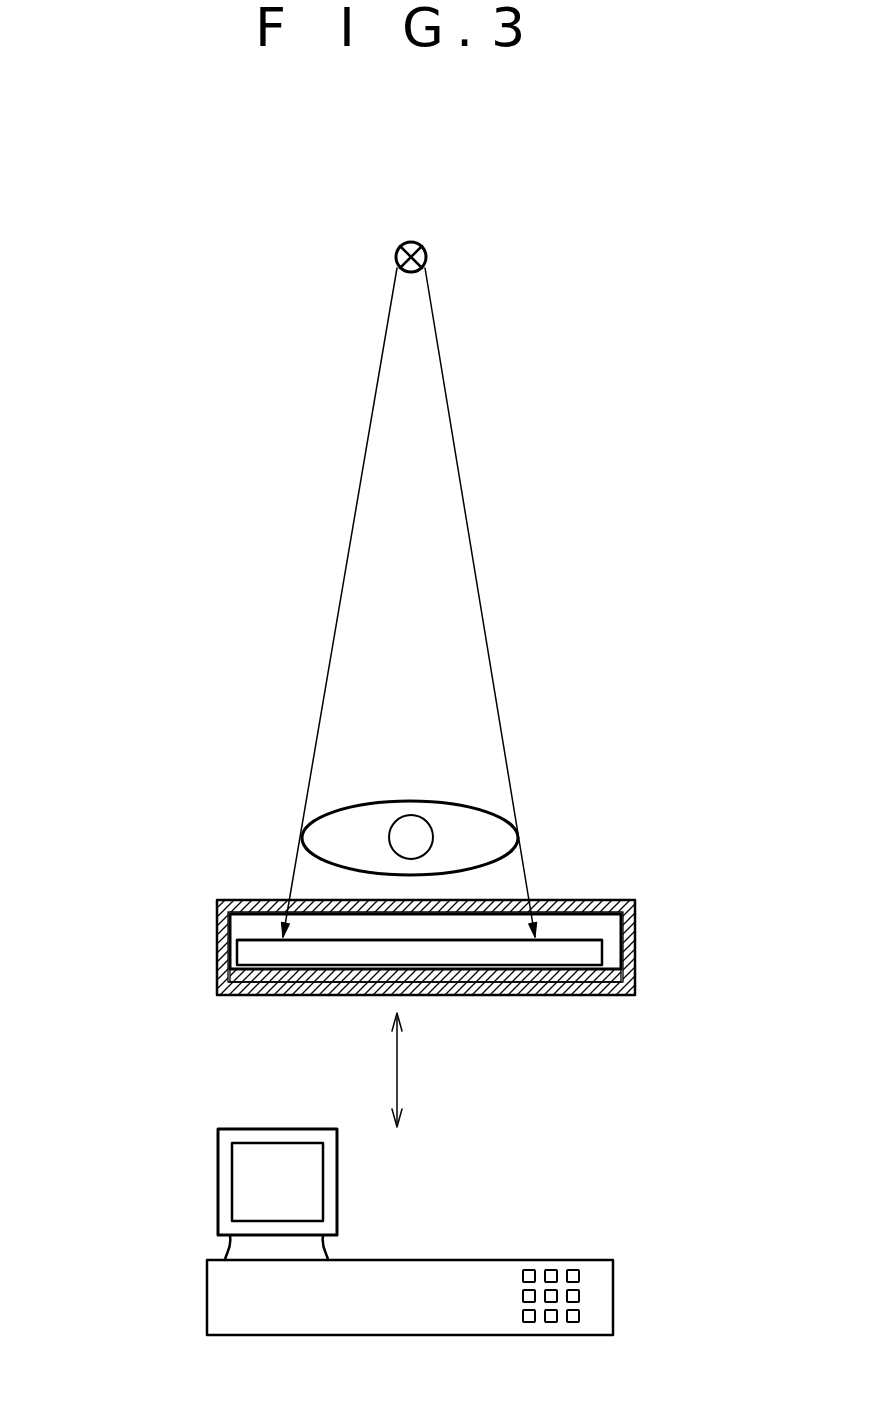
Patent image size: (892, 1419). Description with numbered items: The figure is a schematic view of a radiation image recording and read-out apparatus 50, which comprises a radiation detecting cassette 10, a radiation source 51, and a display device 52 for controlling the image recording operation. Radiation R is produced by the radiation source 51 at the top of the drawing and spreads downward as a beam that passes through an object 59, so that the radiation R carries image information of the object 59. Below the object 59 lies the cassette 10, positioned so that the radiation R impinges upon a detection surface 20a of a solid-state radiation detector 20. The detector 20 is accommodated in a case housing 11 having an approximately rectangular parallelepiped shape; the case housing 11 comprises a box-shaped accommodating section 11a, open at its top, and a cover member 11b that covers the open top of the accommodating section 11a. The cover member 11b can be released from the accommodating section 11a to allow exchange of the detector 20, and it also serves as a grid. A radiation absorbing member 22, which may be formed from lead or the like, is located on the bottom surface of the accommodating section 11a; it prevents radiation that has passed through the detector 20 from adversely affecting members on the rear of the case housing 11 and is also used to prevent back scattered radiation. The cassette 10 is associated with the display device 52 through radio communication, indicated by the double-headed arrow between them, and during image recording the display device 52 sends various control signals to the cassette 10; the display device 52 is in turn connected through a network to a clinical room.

The radiation image recording and read-out apparatus 50 is at (130, 469).
The radiation source 51 is at (406, 243).
The radiation R is at (487, 622).
The object 59 is at (452, 803).
The radiation detecting cassette 10 is at (643, 915).
The case housing 11 is at (247, 850).
The accommodating section 11a is at (214, 920).
The cover member 11b is at (227, 898).
The radiation absorbing member 22 is at (635, 975).
The solid-state radiation detector 20 is at (245, 953).
The detection surface 20a is at (257, 940).
The display device 52 is at (598, 1259).